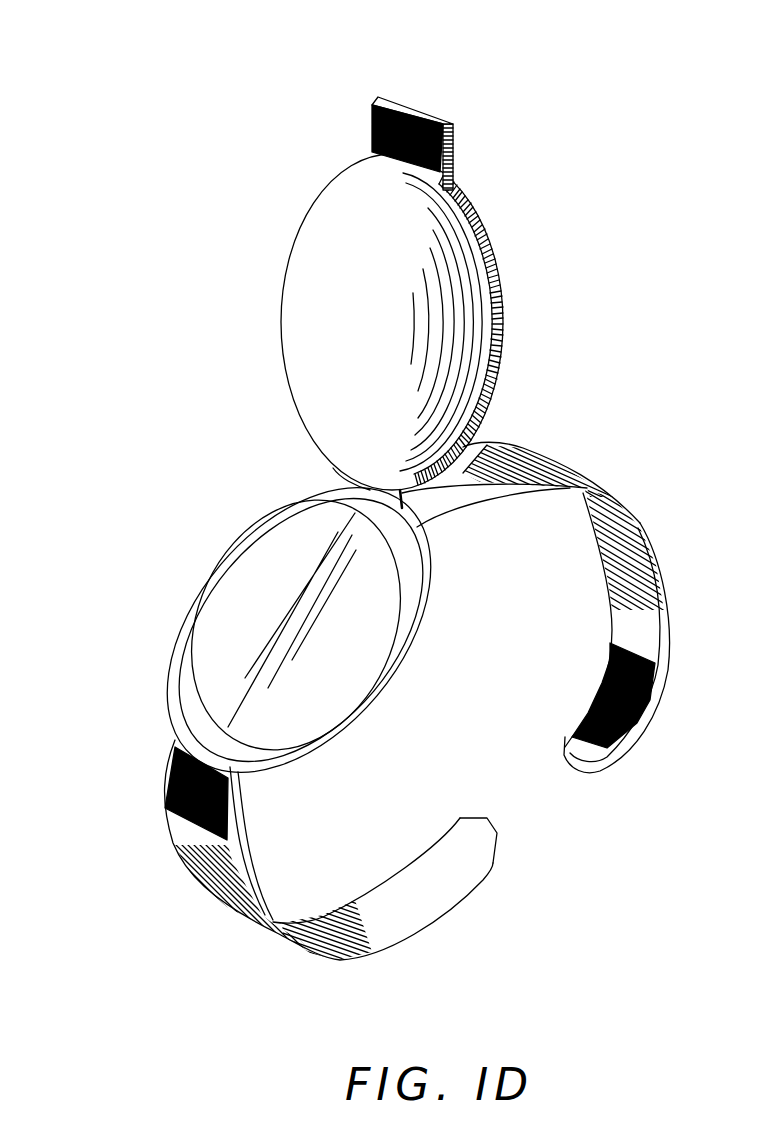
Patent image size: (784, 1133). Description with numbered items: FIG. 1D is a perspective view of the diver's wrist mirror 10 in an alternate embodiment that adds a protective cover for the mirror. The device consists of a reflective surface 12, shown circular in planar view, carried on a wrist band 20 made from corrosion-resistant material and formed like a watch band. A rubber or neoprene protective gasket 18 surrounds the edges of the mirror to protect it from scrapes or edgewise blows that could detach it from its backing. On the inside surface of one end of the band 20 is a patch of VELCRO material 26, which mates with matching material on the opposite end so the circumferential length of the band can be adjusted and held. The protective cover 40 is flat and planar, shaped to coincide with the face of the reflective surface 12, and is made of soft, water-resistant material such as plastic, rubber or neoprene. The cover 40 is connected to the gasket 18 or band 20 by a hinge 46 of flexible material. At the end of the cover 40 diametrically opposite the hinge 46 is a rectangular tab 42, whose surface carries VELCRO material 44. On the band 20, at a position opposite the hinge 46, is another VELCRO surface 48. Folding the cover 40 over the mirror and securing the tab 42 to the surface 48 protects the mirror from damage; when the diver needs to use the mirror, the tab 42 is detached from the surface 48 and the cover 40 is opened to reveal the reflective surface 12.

The diver's wrist mirror 10 is at (196, 312).
The reflective surface 12 is at (270, 525).
The protective gasket 18 is at (420, 638).
The wrist band 20 is at (620, 500).
The VELCRO material 26 is at (647, 703).
The protective cover 40 is at (487, 243).
The rectangular tab 42 is at (453, 143).
The VELCRO material 44 is at (415, 118).
The hinge 46 is at (333, 468).
The VELCRO surface 48 is at (163, 790).